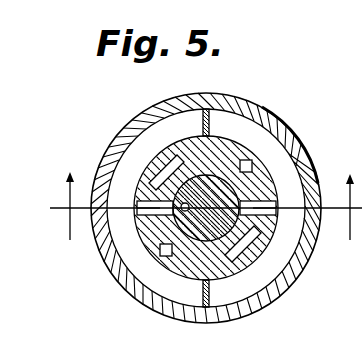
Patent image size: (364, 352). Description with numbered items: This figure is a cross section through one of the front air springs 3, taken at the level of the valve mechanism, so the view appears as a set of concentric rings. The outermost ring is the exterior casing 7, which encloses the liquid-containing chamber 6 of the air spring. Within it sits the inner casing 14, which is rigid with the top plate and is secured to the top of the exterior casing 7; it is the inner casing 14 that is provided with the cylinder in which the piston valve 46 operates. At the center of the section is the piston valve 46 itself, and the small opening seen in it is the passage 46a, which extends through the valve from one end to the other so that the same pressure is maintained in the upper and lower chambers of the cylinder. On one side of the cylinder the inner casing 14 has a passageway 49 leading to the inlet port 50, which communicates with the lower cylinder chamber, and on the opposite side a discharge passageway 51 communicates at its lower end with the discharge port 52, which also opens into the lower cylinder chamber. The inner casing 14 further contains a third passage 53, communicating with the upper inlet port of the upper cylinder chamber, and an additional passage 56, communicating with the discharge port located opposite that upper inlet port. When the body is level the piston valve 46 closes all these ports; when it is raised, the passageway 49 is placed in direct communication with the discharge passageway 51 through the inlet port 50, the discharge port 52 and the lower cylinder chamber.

The front air spring 3 is at (177, 192).
The liquid-containing chamber 6 is at (206, 196).
The exterior casing 7 is at (246, 95).
The inner casing 14 is at (262, 121).
The piston valve 46 is at (206, 208).
The passage 46a is at (168, 248).
The passageway 49 is at (140, 162).
The inlet port 50 is at (136, 215).
The discharge passageway 51 is at (297, 252).
The discharge port 52 is at (279, 212).
The third passage 53 is at (175, 152).
The additional passage 56 is at (247, 167).